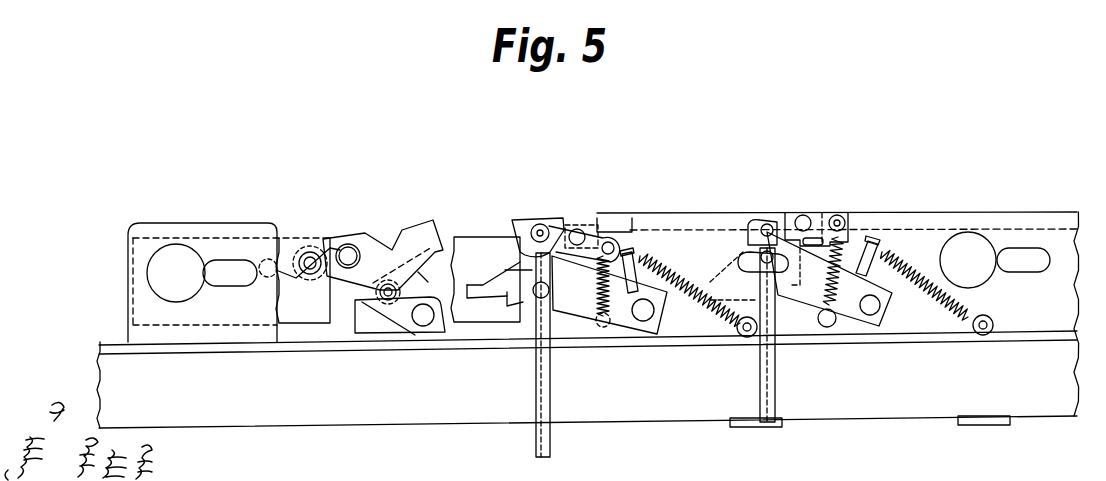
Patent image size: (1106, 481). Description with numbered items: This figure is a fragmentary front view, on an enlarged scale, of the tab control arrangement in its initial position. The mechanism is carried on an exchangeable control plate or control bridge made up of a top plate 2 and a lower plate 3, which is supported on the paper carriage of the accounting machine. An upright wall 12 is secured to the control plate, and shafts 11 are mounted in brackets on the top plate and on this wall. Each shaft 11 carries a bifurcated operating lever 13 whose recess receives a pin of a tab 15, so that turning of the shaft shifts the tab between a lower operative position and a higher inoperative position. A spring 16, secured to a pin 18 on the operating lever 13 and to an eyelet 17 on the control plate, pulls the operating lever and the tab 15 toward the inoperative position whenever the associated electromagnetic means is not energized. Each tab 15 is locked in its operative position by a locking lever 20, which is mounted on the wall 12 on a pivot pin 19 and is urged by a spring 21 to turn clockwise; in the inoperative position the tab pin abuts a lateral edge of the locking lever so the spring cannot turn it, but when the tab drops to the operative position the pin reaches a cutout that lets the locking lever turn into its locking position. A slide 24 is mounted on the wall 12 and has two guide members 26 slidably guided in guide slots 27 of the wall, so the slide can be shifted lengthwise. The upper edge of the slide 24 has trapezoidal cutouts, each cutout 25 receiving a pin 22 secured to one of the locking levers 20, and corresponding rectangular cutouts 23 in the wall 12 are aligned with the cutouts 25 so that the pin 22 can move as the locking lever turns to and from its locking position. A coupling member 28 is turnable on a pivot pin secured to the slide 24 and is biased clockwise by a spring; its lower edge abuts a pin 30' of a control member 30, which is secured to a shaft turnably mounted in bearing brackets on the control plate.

The top plate 2 is at (415, 340).
The lower plate 3 is at (335, 397).
The shaft 11 is at (643, 321).
The upright wall 12 is at (167, 232).
The operating lever 13 is at (575, 312).
The tab 15 is at (543, 441).
The spring 16 is at (683, 285).
The eyelet 17 is at (742, 336).
The pin 18 is at (607, 322).
The pivot pin 19 is at (517, 219).
The locking lever 20 is at (545, 225).
The spring 21 is at (628, 250).
The pin 22 is at (577, 229).
The rectangular cutout 23 is at (588, 226).
The slide 24 is at (292, 245).
The cutout 25 is at (605, 218).
The guide member 26 is at (183, 262).
The guide slot 27 is at (225, 262).
The coupling member 28 is at (370, 238).
The control member 30 is at (431, 278).
The pin 30' is at (365, 292).